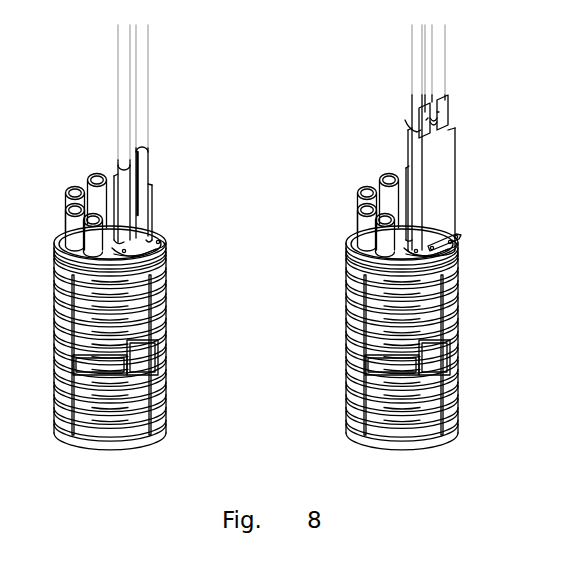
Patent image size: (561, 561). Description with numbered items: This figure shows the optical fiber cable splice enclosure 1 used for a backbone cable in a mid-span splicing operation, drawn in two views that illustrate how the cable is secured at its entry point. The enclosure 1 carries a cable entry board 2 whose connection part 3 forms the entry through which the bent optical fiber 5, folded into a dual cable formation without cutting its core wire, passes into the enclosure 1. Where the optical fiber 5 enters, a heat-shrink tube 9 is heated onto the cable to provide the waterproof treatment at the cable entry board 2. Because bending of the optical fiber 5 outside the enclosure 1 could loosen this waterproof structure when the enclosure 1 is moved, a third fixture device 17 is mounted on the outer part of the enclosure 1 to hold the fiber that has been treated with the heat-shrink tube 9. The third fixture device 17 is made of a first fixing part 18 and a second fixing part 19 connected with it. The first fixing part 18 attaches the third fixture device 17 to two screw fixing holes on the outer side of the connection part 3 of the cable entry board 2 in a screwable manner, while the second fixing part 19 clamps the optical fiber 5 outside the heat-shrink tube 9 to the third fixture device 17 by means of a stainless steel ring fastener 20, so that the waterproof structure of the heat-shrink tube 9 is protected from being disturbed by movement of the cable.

The optical fiber cable splice enclosure 1 is at (115, 490).
The cable entry board 2 is at (56, 241).
The connection part 3 is at (164, 246).
The optical fiber 5 is at (118, 110).
The heat-shrink tube 9 is at (150, 192).
The third fixture device 17 is at (455, 169).
The first fixing part 18 is at (456, 219).
The second fixing part 19 is at (442, 126).
The stainless steel ring fastener 20 is at (448, 96).